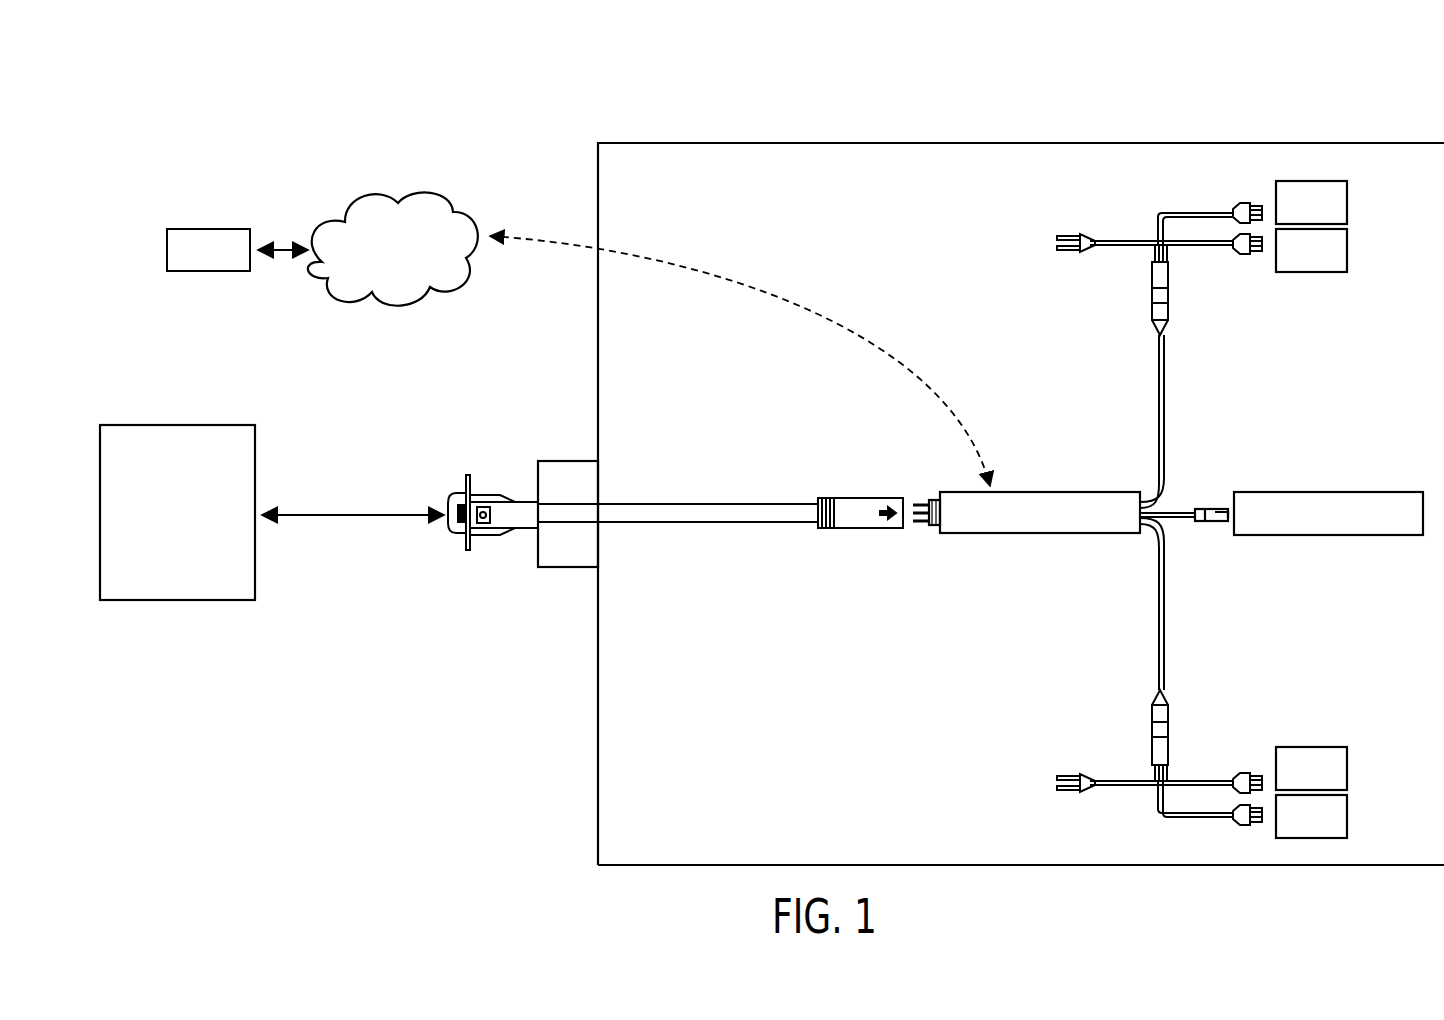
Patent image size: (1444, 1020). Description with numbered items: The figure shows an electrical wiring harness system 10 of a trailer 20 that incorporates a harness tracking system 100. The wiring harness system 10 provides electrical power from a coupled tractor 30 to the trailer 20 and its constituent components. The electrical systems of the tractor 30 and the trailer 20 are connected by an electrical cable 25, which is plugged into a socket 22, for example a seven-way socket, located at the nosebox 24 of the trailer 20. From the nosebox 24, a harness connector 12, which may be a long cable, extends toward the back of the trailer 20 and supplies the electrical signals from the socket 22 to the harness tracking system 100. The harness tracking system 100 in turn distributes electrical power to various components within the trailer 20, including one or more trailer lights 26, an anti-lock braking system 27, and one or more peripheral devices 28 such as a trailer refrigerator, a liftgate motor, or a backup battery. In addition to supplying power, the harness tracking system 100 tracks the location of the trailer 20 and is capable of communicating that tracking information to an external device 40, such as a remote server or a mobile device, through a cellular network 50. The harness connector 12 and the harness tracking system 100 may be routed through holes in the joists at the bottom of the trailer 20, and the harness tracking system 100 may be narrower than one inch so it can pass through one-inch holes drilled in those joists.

The electrical wiring harness system 10 is at (794, 476).
The harness connector 12 is at (858, 498).
The trailer 20 is at (1033, 142).
The socket 22 is at (522, 493).
The nosebox 24 is at (568, 461).
The electrical cable 25 is at (377, 489).
The trailer lights 26 is at (1348, 203).
The anti-lock braking system 27 is at (1348, 815).
The peripheral devices 28 is at (1328, 492).
The tractor 30 is at (175, 424).
The external device 40 is at (210, 228).
The cellular network 50 is at (397, 200).
The harness tracking system 100 is at (1044, 492).